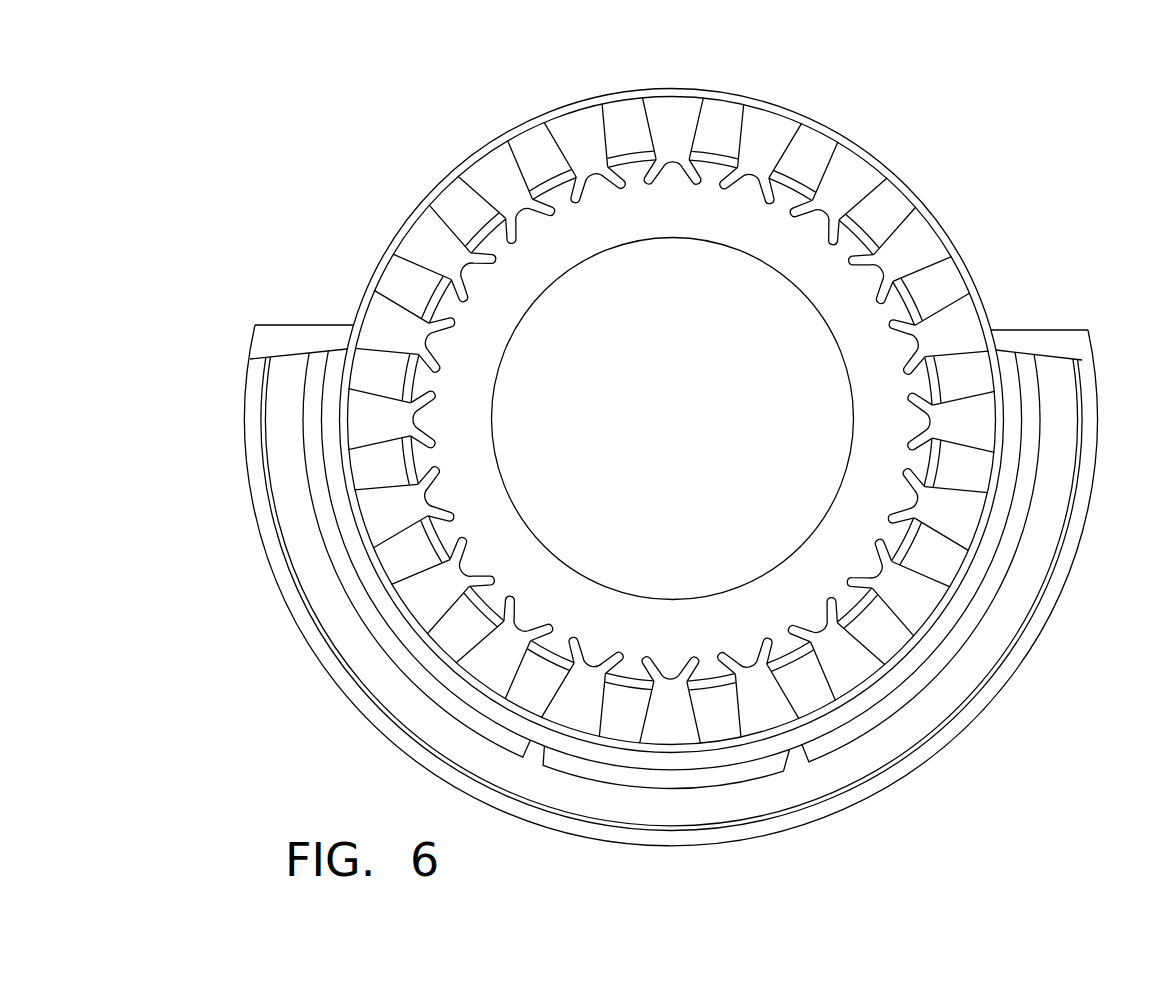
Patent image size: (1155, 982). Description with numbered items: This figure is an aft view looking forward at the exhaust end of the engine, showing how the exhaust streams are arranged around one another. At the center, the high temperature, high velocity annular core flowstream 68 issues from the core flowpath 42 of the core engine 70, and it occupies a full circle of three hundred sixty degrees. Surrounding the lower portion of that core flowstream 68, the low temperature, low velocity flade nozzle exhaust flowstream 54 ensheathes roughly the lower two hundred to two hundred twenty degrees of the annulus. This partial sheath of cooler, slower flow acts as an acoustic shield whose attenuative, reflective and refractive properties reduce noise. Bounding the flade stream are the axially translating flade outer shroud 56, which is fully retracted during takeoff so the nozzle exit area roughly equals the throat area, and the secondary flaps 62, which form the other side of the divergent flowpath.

The core flowpath 42 is at (608, 407).
The flade nozzle exhaust flowstream 54 is at (276, 466).
The flade outer shroud 56 is at (360, 715).
The secondary flaps 62 is at (310, 405).
The annular core flowstream 68 is at (898, 202).
The core engine 70 is at (420, 214).